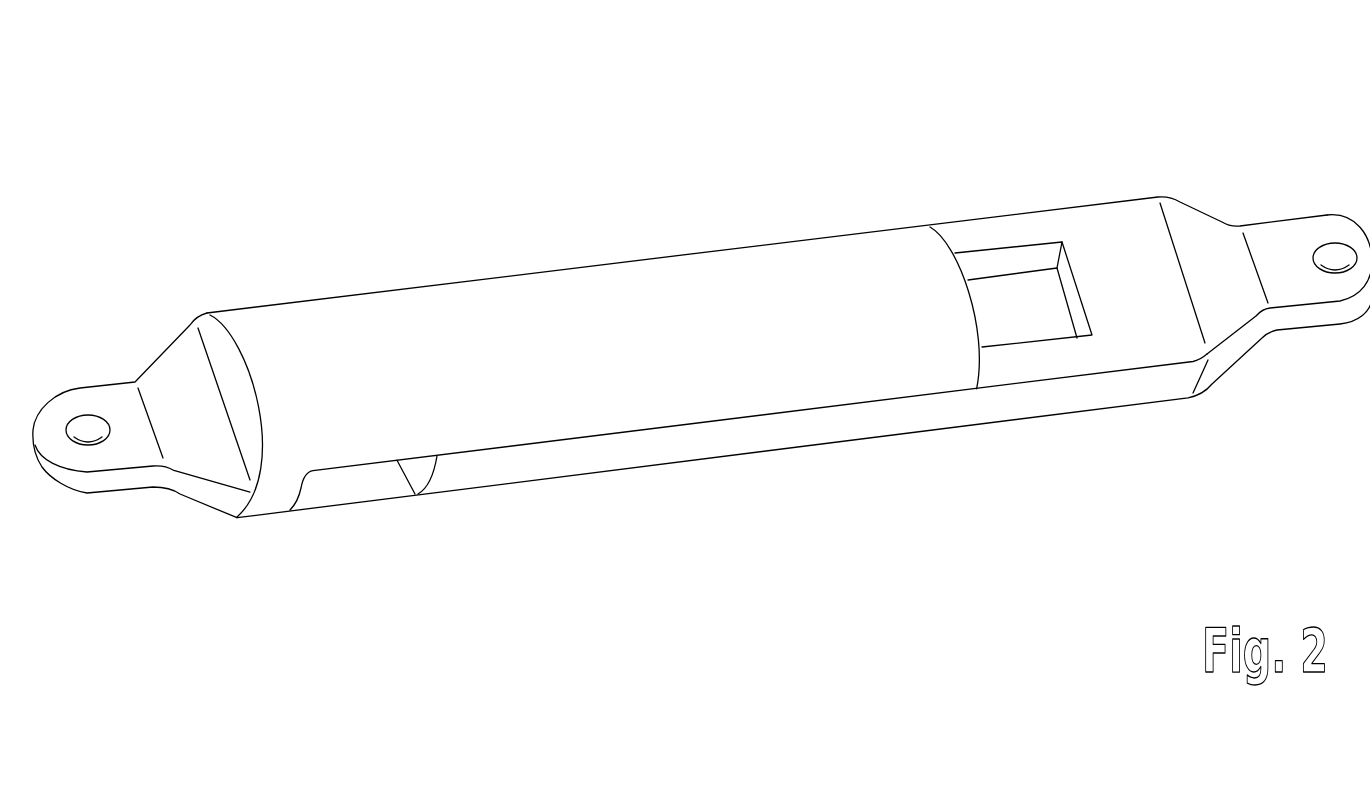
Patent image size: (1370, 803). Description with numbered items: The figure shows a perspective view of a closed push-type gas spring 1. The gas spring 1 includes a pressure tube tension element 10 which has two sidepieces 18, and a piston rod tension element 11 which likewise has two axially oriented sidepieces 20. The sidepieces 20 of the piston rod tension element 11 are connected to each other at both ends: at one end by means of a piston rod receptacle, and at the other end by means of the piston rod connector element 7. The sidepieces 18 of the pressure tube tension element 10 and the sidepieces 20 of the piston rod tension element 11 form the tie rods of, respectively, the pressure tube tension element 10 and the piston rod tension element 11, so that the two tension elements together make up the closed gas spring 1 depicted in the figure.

The push-type gas spring 1 is at (788, 140).
The piston rod connector element 7 is at (203, 450).
The pressure tube tension element 10 is at (1120, 233).
The piston rod tension element 11 is at (280, 492).
The sidepieces 18 is at (997, 233).
The sidepieces 20 is at (553, 295).